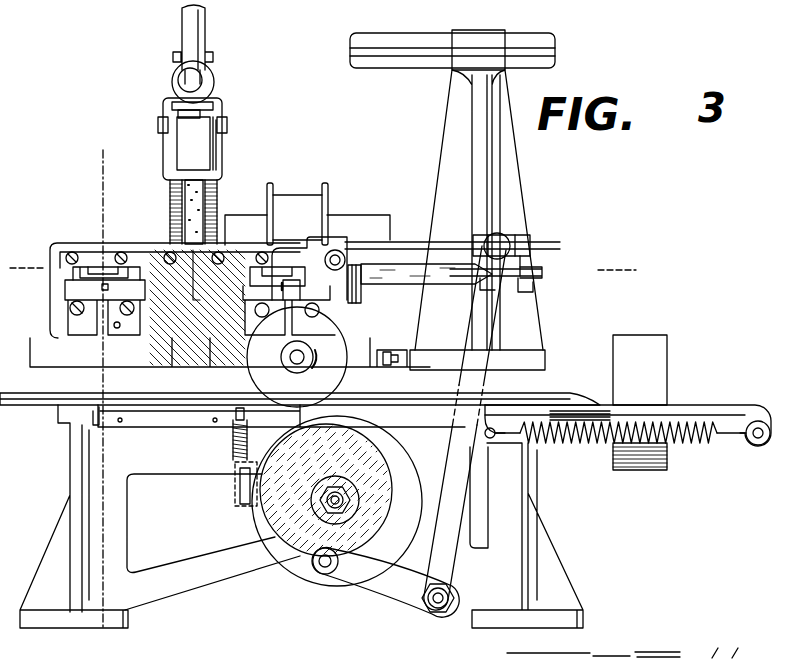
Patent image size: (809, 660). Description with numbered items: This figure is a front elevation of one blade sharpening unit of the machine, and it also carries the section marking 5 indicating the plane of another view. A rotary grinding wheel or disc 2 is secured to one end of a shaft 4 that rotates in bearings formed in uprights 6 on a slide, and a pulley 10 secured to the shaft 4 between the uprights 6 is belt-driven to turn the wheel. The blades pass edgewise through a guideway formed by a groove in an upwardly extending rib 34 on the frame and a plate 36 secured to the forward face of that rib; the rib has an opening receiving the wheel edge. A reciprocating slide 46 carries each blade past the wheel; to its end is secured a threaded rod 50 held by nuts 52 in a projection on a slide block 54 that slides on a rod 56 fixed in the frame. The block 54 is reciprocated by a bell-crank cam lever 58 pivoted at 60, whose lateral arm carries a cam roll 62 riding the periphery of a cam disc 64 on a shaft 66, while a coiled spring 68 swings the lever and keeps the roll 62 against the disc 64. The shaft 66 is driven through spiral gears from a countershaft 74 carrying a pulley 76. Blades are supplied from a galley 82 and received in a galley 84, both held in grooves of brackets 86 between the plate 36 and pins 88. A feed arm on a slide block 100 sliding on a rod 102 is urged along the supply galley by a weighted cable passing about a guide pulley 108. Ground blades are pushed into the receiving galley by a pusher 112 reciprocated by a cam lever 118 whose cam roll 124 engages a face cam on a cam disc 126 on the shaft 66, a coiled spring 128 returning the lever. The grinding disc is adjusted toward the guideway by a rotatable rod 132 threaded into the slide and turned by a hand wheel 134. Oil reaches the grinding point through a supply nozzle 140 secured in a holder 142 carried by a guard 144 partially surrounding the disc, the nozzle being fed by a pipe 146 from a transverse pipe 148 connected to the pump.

The rotary grinding wheel 2 is at (190, 192).
The shaft 4 is at (615, 262).
The section line 5- 5 is at (98, 630).
The uprights 6 is at (244, 216).
The pulley 10 is at (300, 195).
The rib 34 is at (148, 249).
The plate 36 is at (157, 262).
The reciprocating slide 46 is at (402, 264).
The threaded rod 50 is at (540, 272).
The nuts 52 is at (482, 287).
The slide block 54 is at (521, 236).
The rod 56 is at (545, 243).
The bell-crank cam lever 58 is at (466, 494).
The pivot 60 is at (438, 612).
The cam roll 62 is at (322, 575).
The cam disc 64 is at (283, 545).
The shaft 66 is at (332, 504).
The coiled spring 68 is at (700, 442).
The countershaft 74 is at (667, 400).
The pulley 76 is at (667, 352).
The galley 82 is at (252, 267).
The galley 84 is at (72, 281).
The brackets 86 is at (64, 297).
The pins 88 is at (104, 291).
The slide block 100 is at (308, 252).
The rod 102 is at (336, 250).
The guide pulley 108 is at (358, 302).
The pusher 112 is at (97, 268).
The cam lever 118 is at (97, 424).
The cam roll 124 is at (237, 491).
The cam disc 126 is at (296, 582).
The coiled spring 128 is at (231, 446).
The rotatable rod 132 is at (297, 362).
The hand wheel 134 is at (340, 377).
The supply nozzle 140 is at (208, 116).
The holder 142 is at (210, 146).
The guard 144 is at (222, 160).
The pipe 146 is at (206, 19).
The transverse pipe 148 is at (378, 38).